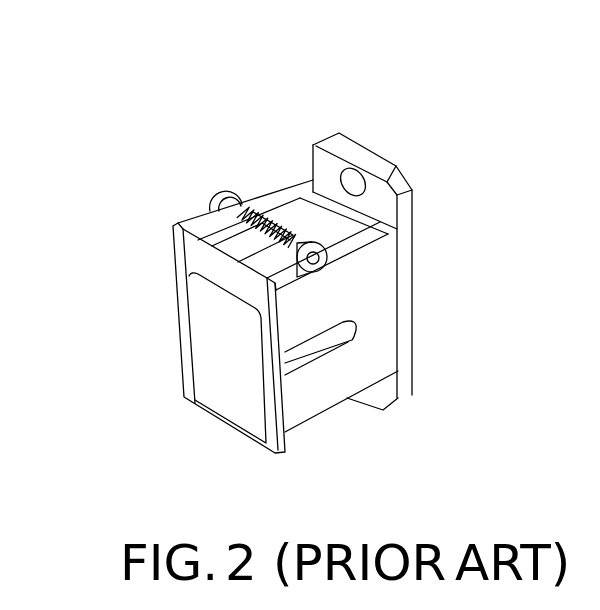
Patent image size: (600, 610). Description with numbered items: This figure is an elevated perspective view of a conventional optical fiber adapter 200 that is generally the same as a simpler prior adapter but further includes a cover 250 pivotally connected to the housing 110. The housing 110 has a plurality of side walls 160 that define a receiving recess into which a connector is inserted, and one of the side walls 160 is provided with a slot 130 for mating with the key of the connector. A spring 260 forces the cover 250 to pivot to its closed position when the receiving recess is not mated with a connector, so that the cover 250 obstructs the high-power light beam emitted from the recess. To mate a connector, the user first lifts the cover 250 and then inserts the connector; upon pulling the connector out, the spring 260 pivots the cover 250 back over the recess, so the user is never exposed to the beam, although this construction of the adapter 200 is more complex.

The fiber adapter 200 is at (397, 138).
The housing 110 is at (289, 182).
The spring 260 is at (271, 222).
The cover 250 is at (215, 367).
The slot 130 is at (323, 337).
The side walls 160 is at (305, 402).